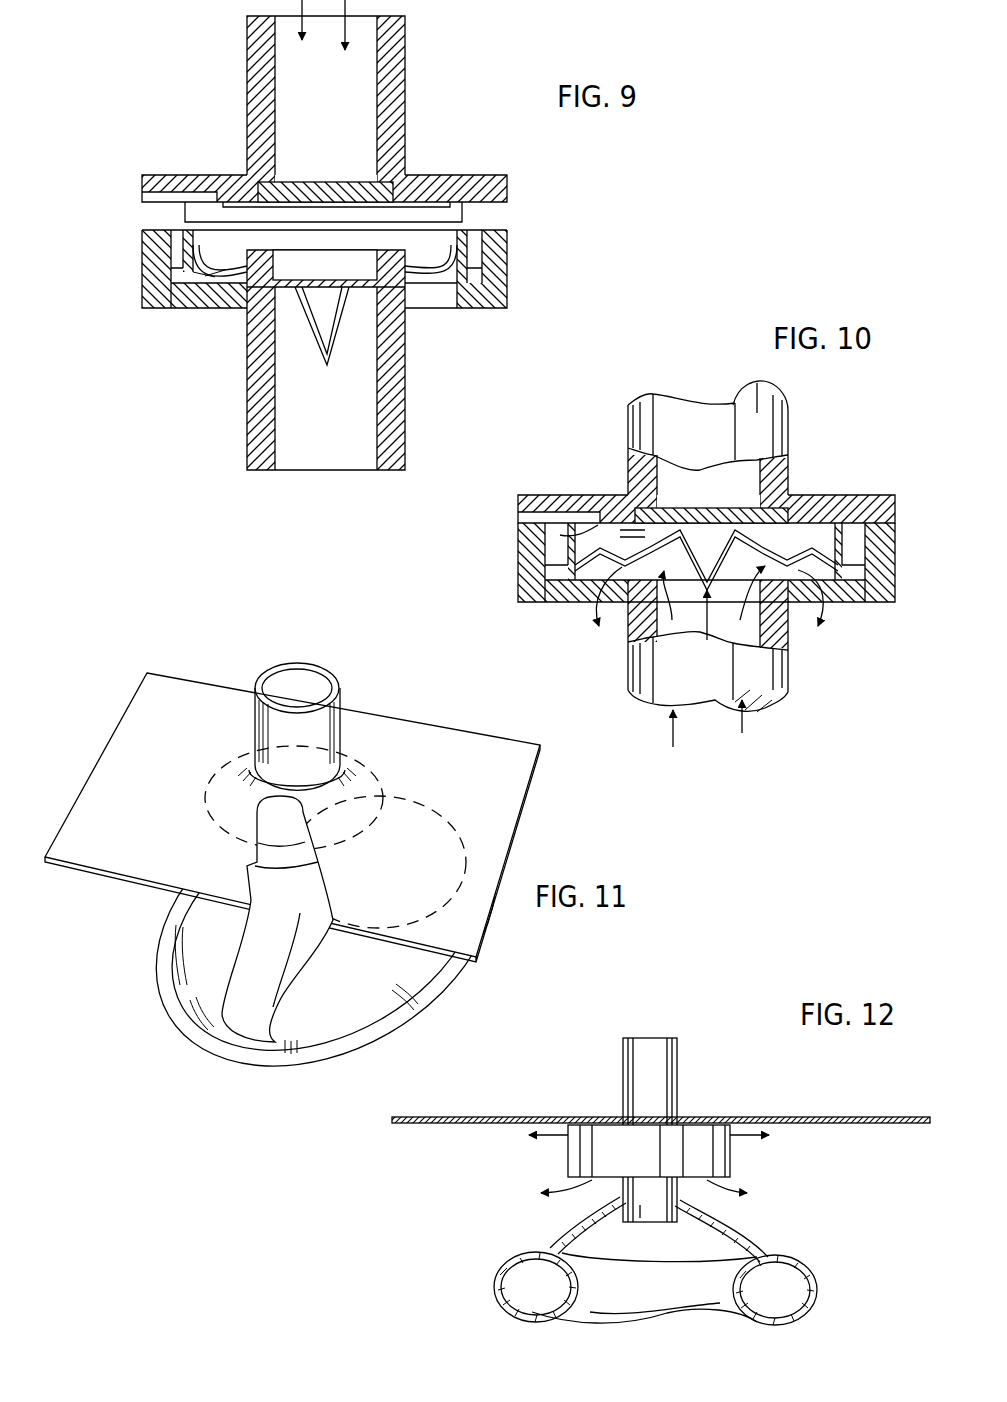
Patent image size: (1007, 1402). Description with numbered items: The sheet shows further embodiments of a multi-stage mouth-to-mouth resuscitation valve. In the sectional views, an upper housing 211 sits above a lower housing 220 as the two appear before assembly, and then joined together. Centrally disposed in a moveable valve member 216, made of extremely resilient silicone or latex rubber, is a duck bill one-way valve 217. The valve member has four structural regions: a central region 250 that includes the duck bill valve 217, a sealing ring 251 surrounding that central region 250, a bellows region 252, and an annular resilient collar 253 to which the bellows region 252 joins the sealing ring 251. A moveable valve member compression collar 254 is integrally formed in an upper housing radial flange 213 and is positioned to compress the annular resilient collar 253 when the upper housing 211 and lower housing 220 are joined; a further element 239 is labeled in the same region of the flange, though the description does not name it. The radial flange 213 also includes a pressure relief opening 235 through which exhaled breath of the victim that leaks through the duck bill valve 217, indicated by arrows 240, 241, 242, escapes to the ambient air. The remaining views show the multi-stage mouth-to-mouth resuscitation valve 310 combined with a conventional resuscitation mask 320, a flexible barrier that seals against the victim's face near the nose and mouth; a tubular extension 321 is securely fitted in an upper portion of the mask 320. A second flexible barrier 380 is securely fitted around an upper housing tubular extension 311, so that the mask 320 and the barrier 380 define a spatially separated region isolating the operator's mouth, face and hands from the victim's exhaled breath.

In FIG. 9, the upper housing 211 is at (441, 118).
In FIG. 10, the upper housing 211 is at (812, 457).
In FIG. 9, the upper housing radial flange 213 is at (446, 180).
In FIG. 9, the moveable valve member 216 is at (300, 277).
In FIG. 9, the duck bill one-way valve 217 is at (312, 330).
In FIG. 9, the lower housing 220 is at (424, 412).
In FIG. 10, the lower housing 220 is at (809, 648).
In FIG. 9, the pressure relief opening 235 is at (148, 198).
In FIG. 10, the pressure relief opening 235 is at (506, 519).
In FIG. 9, the cover plate 239 is at (283, 259).
In FIG. 10, the exhaled breath arrow 240 is at (704, 541).
In FIG. 10, the exhaled breath arrow 241 is at (607, 535).
In FIG. 10, the exhaled breath arrow 242 is at (571, 517).
In FIG. 9, the central region 250 is at (344, 176).
In FIG. 9, the sealing ring 251 is at (245, 285).
In FIG. 9, the bellows region 252 is at (215, 262).
In FIG. 9, the annular resilient collar 253 is at (461, 256).
In FIG. 9, the moveable valve member compression collar 254 is at (463, 212).
In FIG. 11, the multi-stage mouth-to-mouth resuscitation valve 310 is at (270, 822).
In FIG. 12, the multi-stage mouth-to-mouth resuscitation valve 310 is at (746, 1162).
In FIG. 12, the upper housing tubular extension 311 is at (679, 1072).
In FIG. 11, the resuscitation mask 320 is at (392, 1033).
In FIG. 12, the resuscitation mask 320 is at (558, 1231).
In FIG. 12, the tubular extension 321 is at (640, 1205).
In FIG. 11, the second flexible barrier 380 is at (472, 786).
In FIG. 12, the second flexible barrier 380 is at (822, 1117).